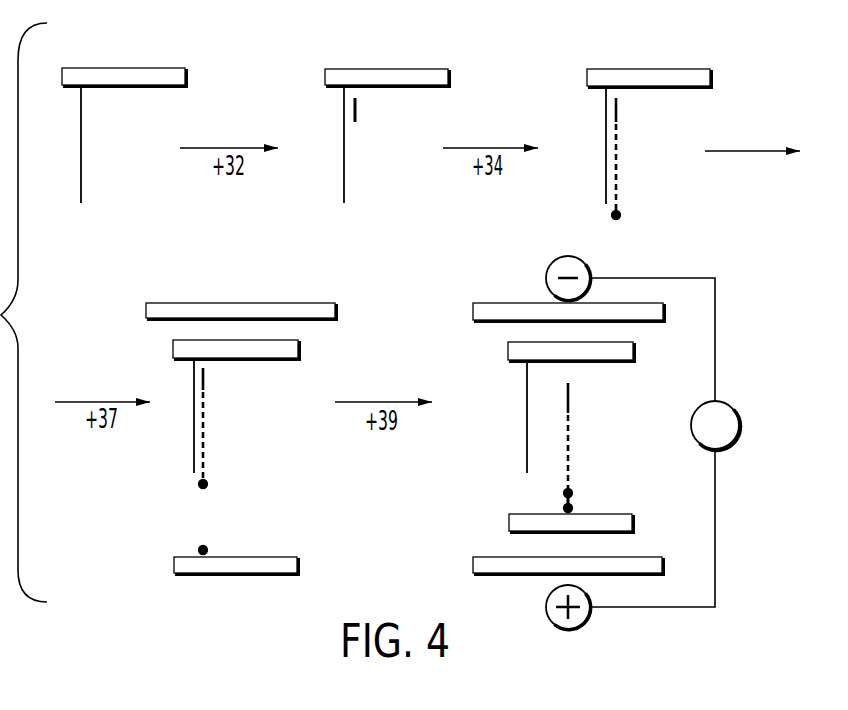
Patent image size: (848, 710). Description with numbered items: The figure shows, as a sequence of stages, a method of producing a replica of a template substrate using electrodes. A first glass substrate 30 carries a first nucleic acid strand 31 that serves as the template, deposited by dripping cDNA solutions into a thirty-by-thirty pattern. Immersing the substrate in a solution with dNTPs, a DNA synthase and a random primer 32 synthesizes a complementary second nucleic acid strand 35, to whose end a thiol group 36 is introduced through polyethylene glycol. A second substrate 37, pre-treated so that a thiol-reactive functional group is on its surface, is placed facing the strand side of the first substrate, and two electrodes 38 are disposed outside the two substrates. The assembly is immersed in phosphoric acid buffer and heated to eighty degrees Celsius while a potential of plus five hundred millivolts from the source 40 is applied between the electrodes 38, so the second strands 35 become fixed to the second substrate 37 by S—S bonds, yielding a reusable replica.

The substrate 30 is at (157, 68).
The first electrode lead 31 is at (82, 133).
The second lead segment 32 is at (357, 110).
The nanotube element 35 is at (619, 136).
The particle 36 is at (621, 215).
The counter substrate 37 is at (271, 557).
The electrode plate 38 is at (490, 303).
The voltmeter 40 is at (740, 425).